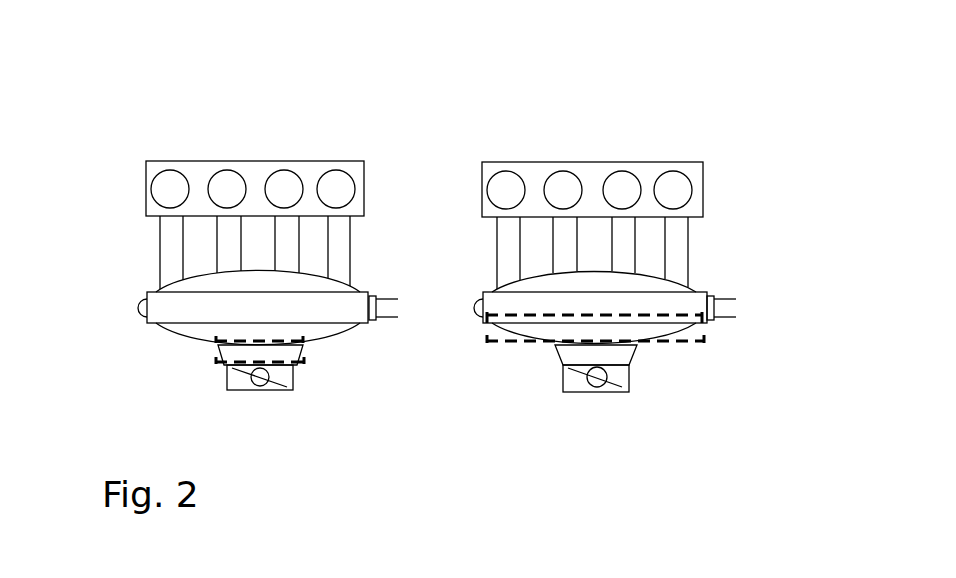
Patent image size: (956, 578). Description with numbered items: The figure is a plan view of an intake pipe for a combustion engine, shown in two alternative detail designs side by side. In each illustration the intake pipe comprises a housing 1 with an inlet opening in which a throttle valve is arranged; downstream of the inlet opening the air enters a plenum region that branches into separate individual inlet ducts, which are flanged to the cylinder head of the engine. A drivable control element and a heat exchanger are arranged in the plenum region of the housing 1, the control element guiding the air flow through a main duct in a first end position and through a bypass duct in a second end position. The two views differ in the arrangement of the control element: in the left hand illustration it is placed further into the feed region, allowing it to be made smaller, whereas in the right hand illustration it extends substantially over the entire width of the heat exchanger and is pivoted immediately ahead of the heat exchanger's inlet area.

The housing 1 is at (338, 338).